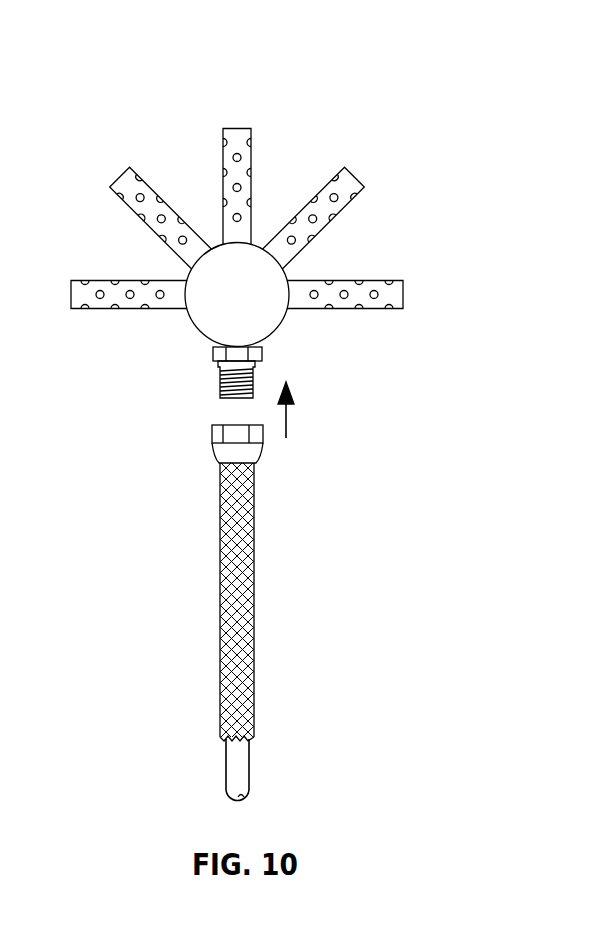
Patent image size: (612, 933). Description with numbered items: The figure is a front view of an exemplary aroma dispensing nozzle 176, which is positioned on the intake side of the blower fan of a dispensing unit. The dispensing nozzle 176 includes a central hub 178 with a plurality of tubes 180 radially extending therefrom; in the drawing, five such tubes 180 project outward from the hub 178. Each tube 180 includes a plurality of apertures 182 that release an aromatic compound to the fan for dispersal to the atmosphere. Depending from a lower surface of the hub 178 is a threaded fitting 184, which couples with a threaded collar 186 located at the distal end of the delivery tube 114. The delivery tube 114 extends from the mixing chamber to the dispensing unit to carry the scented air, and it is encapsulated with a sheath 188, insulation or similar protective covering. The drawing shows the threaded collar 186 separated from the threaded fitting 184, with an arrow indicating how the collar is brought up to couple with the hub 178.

The dispensing nozzle 176 is at (178, 63).
The hub 178 is at (203, 328).
The tubes 180 is at (373, 280).
The apertures 182 is at (326, 186).
The threaded fitting 184 is at (220, 387).
The threaded collar 186 is at (212, 433).
The sheath 188 is at (220, 572).
The delivery tube 114 is at (222, 757).